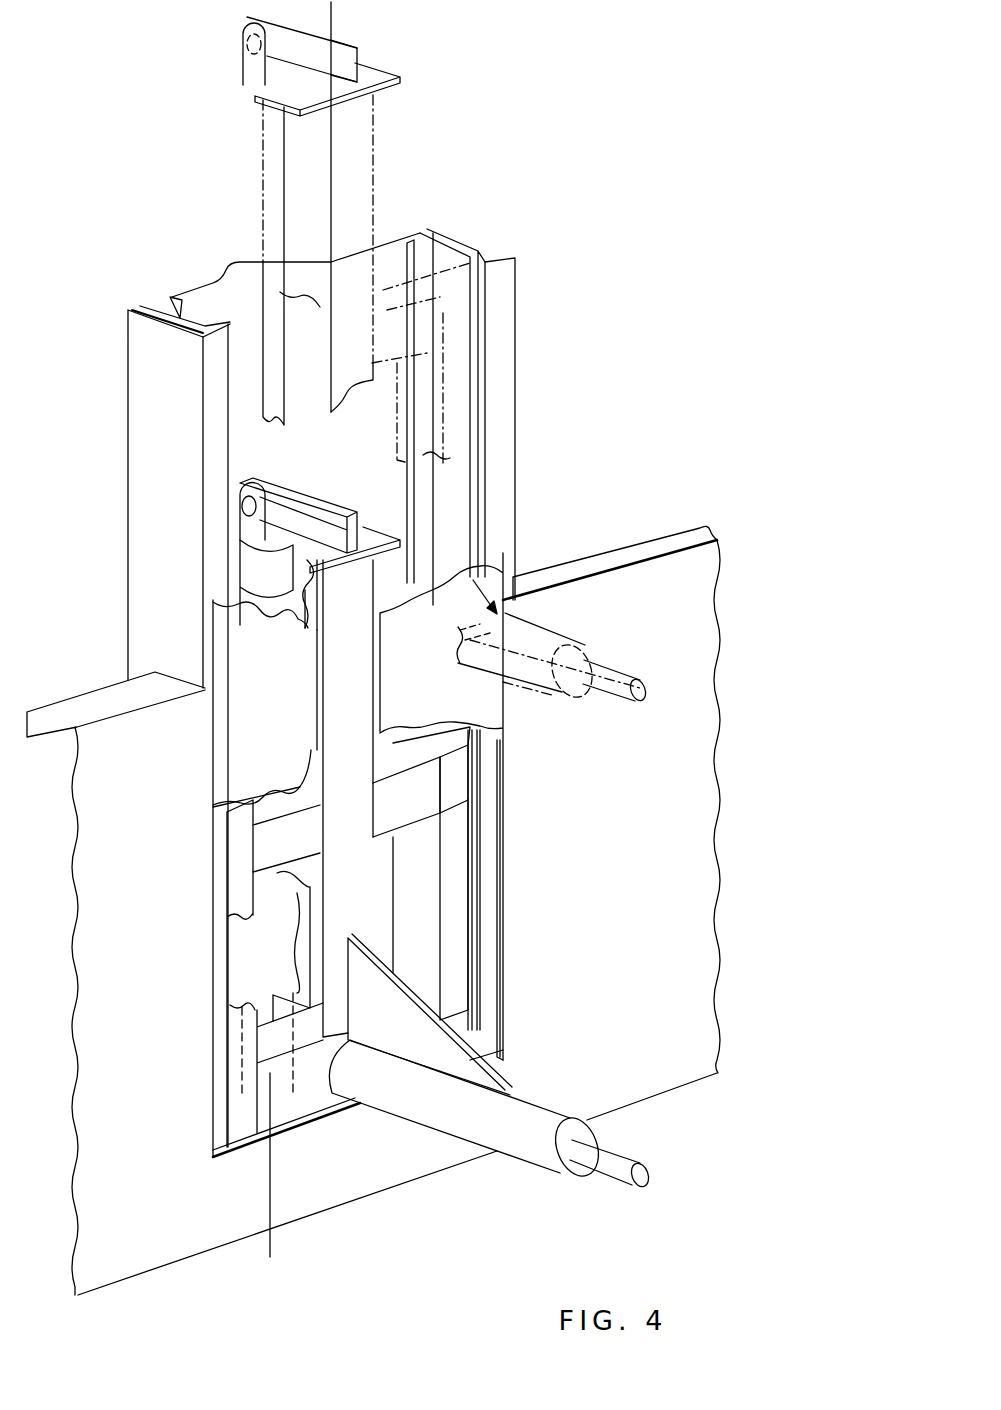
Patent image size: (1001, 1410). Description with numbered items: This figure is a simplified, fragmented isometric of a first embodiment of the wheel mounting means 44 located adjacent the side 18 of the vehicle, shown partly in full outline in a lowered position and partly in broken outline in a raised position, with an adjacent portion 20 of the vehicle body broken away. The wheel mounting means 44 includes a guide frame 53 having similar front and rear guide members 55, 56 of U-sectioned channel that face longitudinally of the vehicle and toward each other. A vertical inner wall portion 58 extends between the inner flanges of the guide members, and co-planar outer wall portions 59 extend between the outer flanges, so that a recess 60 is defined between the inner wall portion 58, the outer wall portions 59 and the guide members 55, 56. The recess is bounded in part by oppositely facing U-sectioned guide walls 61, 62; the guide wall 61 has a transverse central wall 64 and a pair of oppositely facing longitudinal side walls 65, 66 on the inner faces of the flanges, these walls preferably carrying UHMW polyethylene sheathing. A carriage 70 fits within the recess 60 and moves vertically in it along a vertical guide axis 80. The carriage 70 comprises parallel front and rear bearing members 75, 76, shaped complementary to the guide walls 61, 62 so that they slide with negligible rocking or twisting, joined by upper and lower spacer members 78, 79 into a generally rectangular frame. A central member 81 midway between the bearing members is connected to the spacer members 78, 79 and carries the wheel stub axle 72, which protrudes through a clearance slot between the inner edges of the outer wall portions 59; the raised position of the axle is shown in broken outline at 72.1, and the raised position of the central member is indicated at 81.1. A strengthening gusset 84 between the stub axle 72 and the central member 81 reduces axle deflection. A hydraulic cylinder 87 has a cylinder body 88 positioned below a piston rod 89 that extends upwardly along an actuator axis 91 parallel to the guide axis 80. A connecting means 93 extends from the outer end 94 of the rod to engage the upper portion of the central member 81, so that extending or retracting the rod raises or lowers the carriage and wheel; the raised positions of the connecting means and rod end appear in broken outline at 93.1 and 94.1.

The side 18 is at (655, 577).
The wall panel 20 is at (313, 1217).
The wheel mounting means 44 is at (545, 292).
The guide frame 53 is at (473, 210).
The front guide member 55 is at (500, 280).
The rear guide member 56 is at (165, 410).
The inner wall portion 58 is at (173, 300).
The outer wall portions 59 is at (258, 688).
The recess 60 is at (363, 490).
The guide wall 61 is at (476, 229).
The guide wall 62 is at (160, 296).
The central wall 64 is at (463, 257).
The longitudinal side wall 65 is at (428, 245).
The longitudinal side wall 66 is at (480, 297).
The carriage 70 is at (510, 795).
The wheel stub axle 72 is at (513, 1107).
The upper position of stub axle 72.1 is at (550, 630).
The front bearing member 75 is at (457, 825).
The rear bearing member 76 is at (243, 855).
The upper spacer member 78 is at (398, 818).
The lower spacer member 79 is at (273, 1043).
The guide axis 80 is at (334, 14).
The central member 81 is at (347, 863).
The rod hidden portion 81.1 is at (353, 133).
The strengthening gusset 84 is at (443, 1013).
The hydraulic cylinder 87 is at (275, 928).
The cylinder body 88 is at (267, 960).
The piston rod 89 is at (268, 163).
The actuator axis 91 is at (268, 1250).
The connecting means 93 is at (282, 493).
The lever arm upper position 93.1 is at (247, 18).
The outer end of the rod 94 is at (248, 527).
The pivot boss upper position 94.1 is at (240, 66).